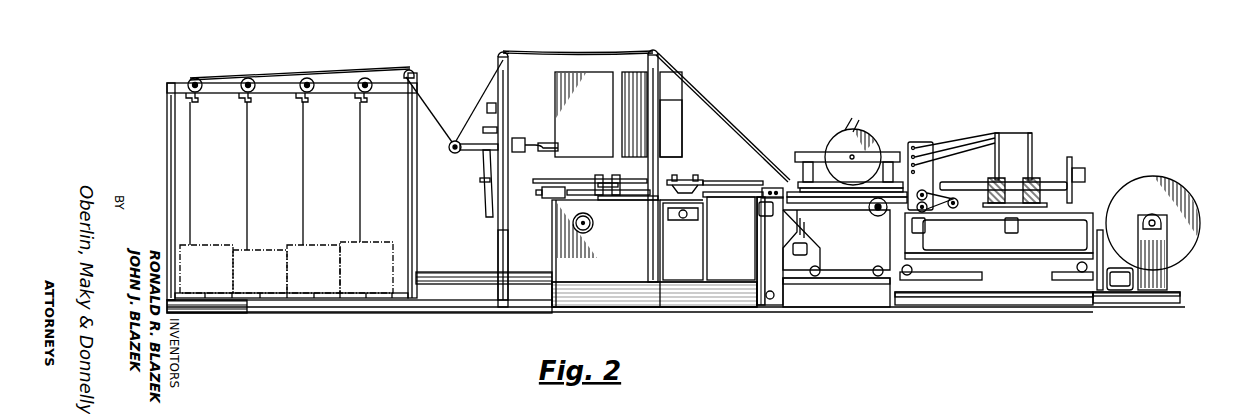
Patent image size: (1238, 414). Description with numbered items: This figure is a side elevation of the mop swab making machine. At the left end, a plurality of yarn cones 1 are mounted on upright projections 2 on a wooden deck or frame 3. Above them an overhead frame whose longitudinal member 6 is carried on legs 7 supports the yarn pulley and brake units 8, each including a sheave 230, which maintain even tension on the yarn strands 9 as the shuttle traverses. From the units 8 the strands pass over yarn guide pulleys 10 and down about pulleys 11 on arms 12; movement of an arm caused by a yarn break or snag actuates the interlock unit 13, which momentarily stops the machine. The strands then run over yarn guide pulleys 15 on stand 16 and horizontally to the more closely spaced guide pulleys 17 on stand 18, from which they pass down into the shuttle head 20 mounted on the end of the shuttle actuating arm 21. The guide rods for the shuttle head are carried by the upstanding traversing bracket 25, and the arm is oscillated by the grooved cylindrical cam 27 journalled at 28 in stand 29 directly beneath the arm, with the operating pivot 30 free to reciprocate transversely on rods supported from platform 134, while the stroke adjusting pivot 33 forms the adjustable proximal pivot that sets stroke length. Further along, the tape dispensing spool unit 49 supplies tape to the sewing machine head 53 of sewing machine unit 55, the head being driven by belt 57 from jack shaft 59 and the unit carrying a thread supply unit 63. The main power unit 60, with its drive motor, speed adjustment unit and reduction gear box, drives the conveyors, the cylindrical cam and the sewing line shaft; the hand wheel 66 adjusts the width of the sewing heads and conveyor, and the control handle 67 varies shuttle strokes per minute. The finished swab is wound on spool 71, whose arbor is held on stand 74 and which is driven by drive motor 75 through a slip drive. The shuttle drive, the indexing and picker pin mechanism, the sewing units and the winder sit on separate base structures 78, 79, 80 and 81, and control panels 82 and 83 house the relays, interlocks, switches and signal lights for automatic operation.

The yarn cones 1 is at (322, 250).
The upright projections 2 is at (260, 299).
The wooden deck or frame 3 is at (323, 302).
The longitudinal member 6 is at (274, 93).
The legs 7 is at (166, 130).
The yarn pulley and brake units 8 is at (310, 98).
The yarn strands 9 is at (230, 78).
The yarn guide pulleys 10 is at (410, 70).
The pulleys 11 is at (452, 153).
The arms 12 is at (477, 158).
The interlock unit 13 is at (519, 134).
The yarn guide pulleys 15 is at (505, 55).
The stand 16 is at (508, 244).
The guide pulleys 17 is at (657, 53).
The stand 18 is at (660, 133).
The shuttle head 20 is at (788, 172).
The shuttle actuating arm 21 is at (735, 180).
The traversing bracket 25 is at (770, 246).
The grooved cylindrical cam 27 is at (663, 233).
The journal 28 is at (679, 220).
The stand 29 is at (708, 260).
The operating pivot 30 is at (683, 179).
The stroke adjusting pivot 33 is at (602, 173).
The tape dispensing spool unit 49 is at (878, 137).
The sewing machine head 53 is at (930, 142).
The sewing machine unit 55 is at (1051, 147).
The belt 57 is at (928, 210).
The jack shaft 59 is at (958, 208).
The power unit 60 is at (600, 278).
The thread supply unit 63 is at (996, 181).
The hand wheel 66 is at (872, 232).
The control handle 67 is at (588, 233).
The spool 71 is at (1190, 233).
The stand 74 is at (1163, 281).
The drive motor 75 is at (1118, 291).
The base or frame structure 78 is at (675, 298).
The base or frame structure 79 is at (838, 295).
The base or frame structure 80 is at (998, 287).
The base or frame structure 81 is at (1158, 303).
The control panel 82 is at (615, 126).
The control panel 83 is at (673, 100).
The platform 134 is at (613, 200).
The sheave 230 is at (193, 79).